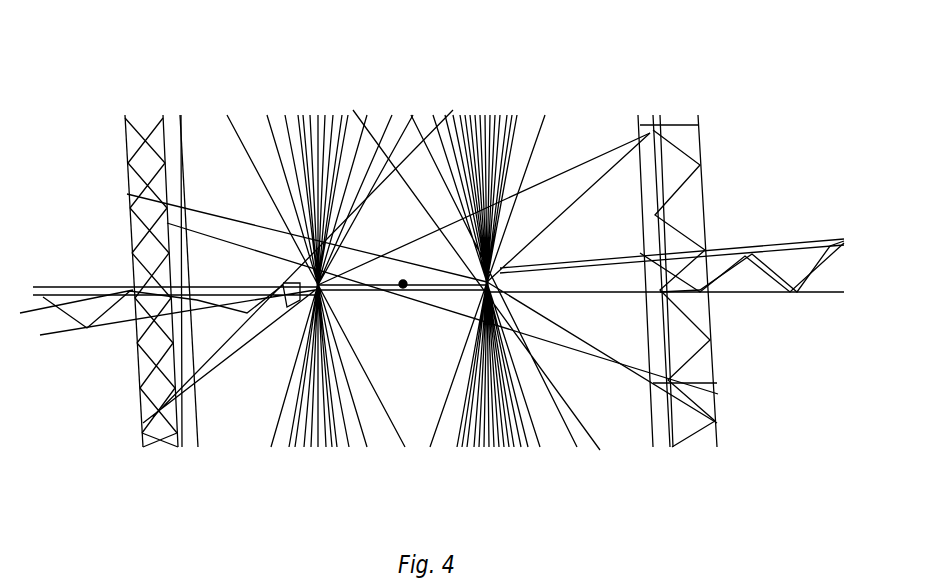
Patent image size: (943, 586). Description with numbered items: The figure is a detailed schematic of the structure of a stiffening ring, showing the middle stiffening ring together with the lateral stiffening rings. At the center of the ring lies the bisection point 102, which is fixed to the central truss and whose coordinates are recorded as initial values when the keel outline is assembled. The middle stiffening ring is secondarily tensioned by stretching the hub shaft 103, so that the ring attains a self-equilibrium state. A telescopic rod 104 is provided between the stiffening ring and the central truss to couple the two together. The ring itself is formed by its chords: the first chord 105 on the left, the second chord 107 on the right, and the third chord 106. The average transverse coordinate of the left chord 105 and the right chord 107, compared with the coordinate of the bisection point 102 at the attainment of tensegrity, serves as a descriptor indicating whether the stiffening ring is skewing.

The bisection point 102 is at (400, 296).
The hub shaft 103 is at (446, 292).
The telescopic rod 104 is at (502, 290).
The first chord 105 is at (126, 182).
The third chord 106 is at (166, 229).
The second chord 107 is at (184, 187).